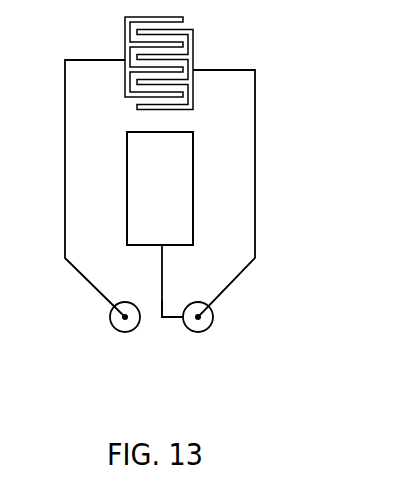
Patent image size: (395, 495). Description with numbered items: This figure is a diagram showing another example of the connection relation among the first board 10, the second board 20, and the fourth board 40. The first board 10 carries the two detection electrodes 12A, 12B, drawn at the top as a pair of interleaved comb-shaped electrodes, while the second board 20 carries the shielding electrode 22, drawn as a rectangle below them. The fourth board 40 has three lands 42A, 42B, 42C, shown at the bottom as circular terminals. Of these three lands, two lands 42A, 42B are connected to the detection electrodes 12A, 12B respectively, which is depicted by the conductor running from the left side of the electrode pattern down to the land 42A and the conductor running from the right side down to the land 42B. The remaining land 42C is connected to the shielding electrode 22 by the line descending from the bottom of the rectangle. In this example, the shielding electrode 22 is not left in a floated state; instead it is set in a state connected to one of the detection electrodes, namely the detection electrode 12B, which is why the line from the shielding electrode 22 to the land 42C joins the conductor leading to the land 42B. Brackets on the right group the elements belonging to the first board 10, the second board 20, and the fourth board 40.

The first board 10 is at (200, 64).
The detection electrode 12A is at (125, 37).
The detection electrode 12B is at (195, 46).
The second board 20 is at (240, 187).
The shielding electrode 22 is at (193, 187).
The fourth board 40 is at (225, 325).
The land 42A is at (117, 330).
The land 42B is at (205, 330).
The land 42C is at (173, 319).